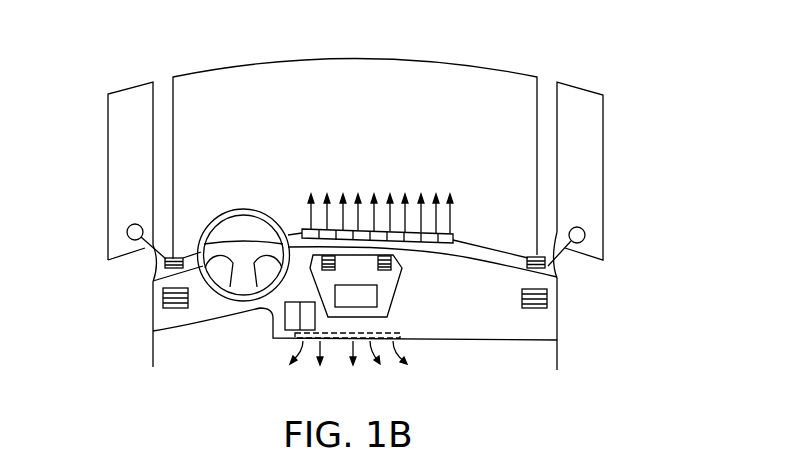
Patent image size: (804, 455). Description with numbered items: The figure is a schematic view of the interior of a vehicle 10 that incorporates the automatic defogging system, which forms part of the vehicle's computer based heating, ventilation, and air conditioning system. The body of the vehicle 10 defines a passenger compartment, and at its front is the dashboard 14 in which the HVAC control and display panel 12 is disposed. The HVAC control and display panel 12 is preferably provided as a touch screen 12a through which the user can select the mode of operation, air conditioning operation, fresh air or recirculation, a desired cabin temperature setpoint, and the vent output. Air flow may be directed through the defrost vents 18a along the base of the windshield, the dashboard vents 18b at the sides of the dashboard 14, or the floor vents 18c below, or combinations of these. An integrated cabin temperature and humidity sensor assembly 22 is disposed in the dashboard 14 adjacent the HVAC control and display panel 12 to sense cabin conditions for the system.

The vehicle 10 is at (452, 82).
The HVAC control and display panel 12 is at (397, 299).
The touch screen 12a is at (359, 292).
The dashboard 14 is at (540, 330).
The defrost vents 18a is at (174, 257).
The dashboard vents 18b is at (163, 309).
The floor vents 18c is at (287, 340).
The integrated cabin temperature and humidity sensor assembly 22 is at (271, 316).